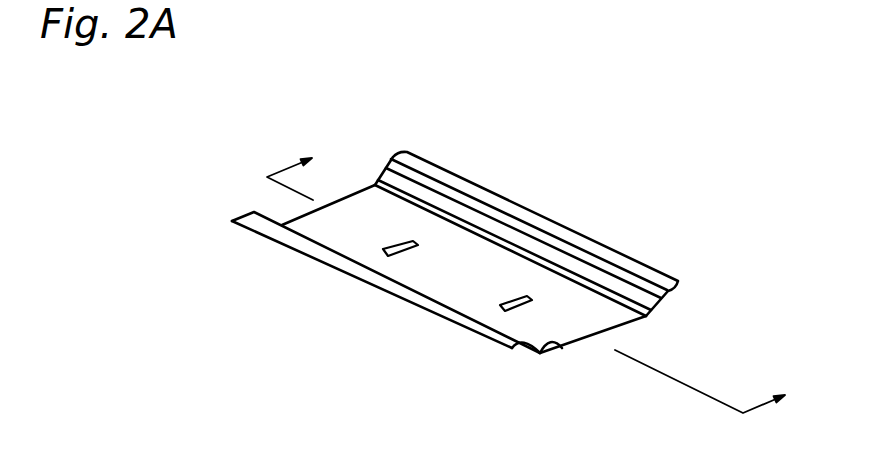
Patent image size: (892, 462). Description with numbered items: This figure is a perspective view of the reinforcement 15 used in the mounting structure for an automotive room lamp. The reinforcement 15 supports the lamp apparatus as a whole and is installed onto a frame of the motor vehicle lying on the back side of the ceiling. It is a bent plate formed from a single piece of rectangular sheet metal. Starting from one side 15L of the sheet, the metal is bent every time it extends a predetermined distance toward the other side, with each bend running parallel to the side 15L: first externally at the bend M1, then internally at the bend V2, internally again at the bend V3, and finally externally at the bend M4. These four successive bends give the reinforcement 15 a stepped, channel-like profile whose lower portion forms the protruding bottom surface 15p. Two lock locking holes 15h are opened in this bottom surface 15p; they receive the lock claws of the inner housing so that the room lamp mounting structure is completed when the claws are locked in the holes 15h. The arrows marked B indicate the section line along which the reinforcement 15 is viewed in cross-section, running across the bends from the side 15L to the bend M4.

The reinforcement 15 is at (475, 236).
The lock locking holes 15h is at (406, 241).
The side 15L is at (536, 189).
The bottom surface 15p is at (593, 325).
The external bend M1 is at (393, 156).
The internal bend V2 is at (375, 185).
The internal bend V3 is at (562, 348).
The external bend M4 is at (254, 212).
The section line B- B is at (536, 270).